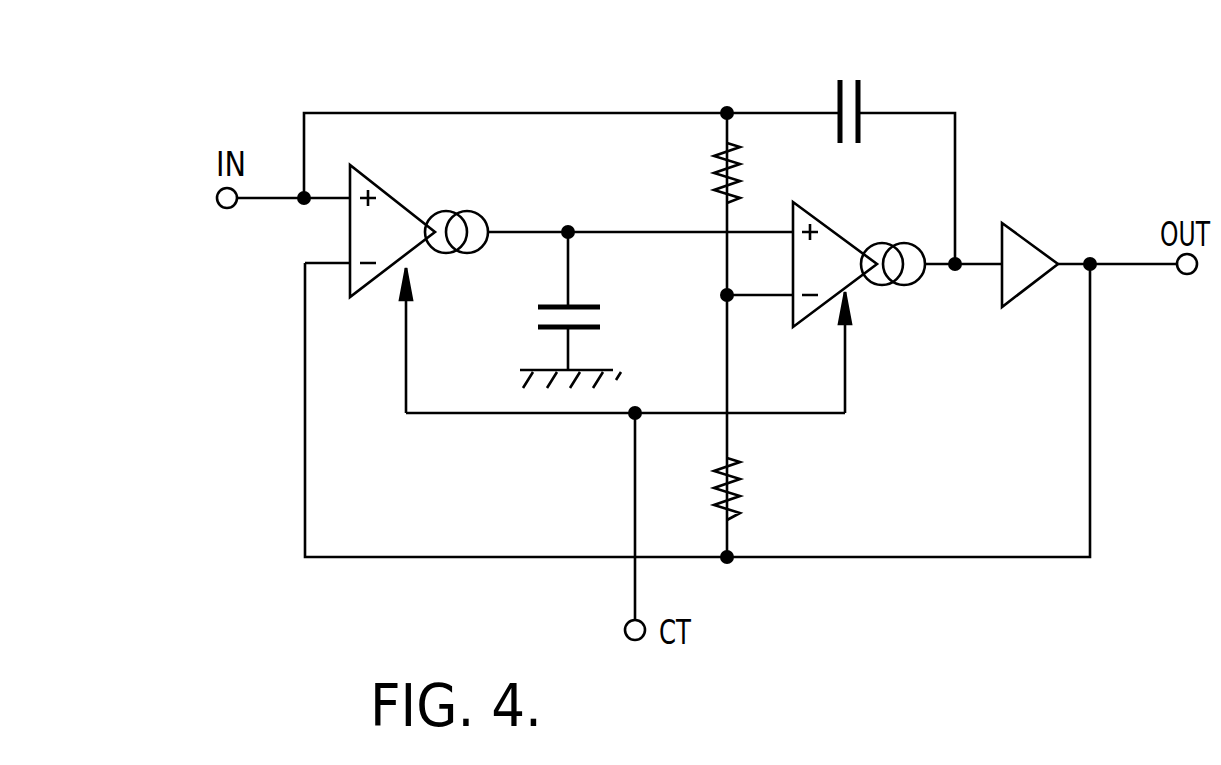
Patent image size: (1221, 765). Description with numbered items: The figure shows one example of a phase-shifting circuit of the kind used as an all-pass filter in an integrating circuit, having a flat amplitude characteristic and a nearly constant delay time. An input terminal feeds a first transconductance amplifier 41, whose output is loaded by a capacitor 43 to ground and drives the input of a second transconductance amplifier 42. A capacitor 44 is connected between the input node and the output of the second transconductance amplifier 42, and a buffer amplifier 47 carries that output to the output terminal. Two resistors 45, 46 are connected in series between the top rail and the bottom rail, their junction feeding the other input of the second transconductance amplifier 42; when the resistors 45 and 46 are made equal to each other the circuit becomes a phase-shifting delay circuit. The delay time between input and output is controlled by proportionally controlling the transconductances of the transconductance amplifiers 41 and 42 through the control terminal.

The transconductance amplifier 41 is at (410, 197).
The transconductance amplifier 42 is at (835, 222).
The capacitor 43 is at (593, 315).
The capacitor 44 is at (859, 90).
The resistor 45 is at (717, 161).
The resistor 46 is at (738, 480).
The buffer amplifier 47 is at (1025, 232).